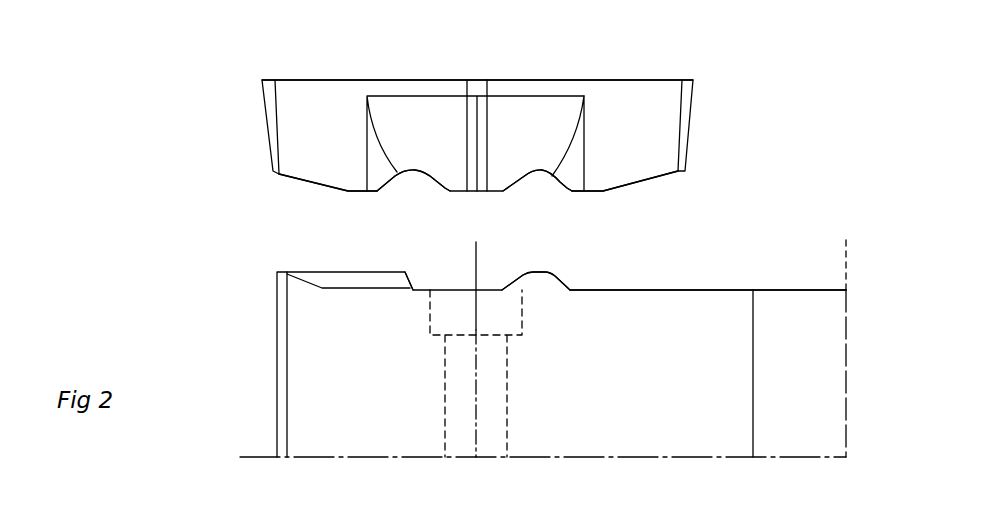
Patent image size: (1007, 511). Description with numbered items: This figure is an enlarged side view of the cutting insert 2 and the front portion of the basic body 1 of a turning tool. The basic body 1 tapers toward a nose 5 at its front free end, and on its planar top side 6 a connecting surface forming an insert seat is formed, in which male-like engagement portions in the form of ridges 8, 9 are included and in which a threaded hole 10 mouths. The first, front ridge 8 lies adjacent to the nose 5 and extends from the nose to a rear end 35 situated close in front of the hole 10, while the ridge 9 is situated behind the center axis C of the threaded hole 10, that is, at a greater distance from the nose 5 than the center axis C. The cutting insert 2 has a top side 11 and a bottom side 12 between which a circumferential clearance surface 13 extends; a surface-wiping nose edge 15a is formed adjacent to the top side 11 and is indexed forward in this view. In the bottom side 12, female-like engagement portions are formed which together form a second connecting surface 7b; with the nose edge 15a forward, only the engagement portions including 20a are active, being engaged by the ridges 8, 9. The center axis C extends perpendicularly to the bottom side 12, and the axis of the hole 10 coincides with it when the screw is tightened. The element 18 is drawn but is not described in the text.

The basic body 1 is at (230, 290).
The cutting insert 2 is at (729, 93).
The nose 5 is at (277, 330).
The top side 6 is at (772, 289).
The second connecting surface 7b is at (391, 210).
The engagement portion 8 is at (355, 287).
The engagement portion 9 is at (560, 277).
The threaded hole 10 is at (493, 383).
The top side 11 is at (640, 79).
The bottom side 12 is at (590, 191).
The clearance surface 13 is at (653, 146).
The nose edge 15a is at (261, 80).
The lower chamfer 18 is at (298, 184).
The engagement portion 20a is at (538, 174).
The rear end 35 is at (411, 286).
The center axis C is at (478, 263).